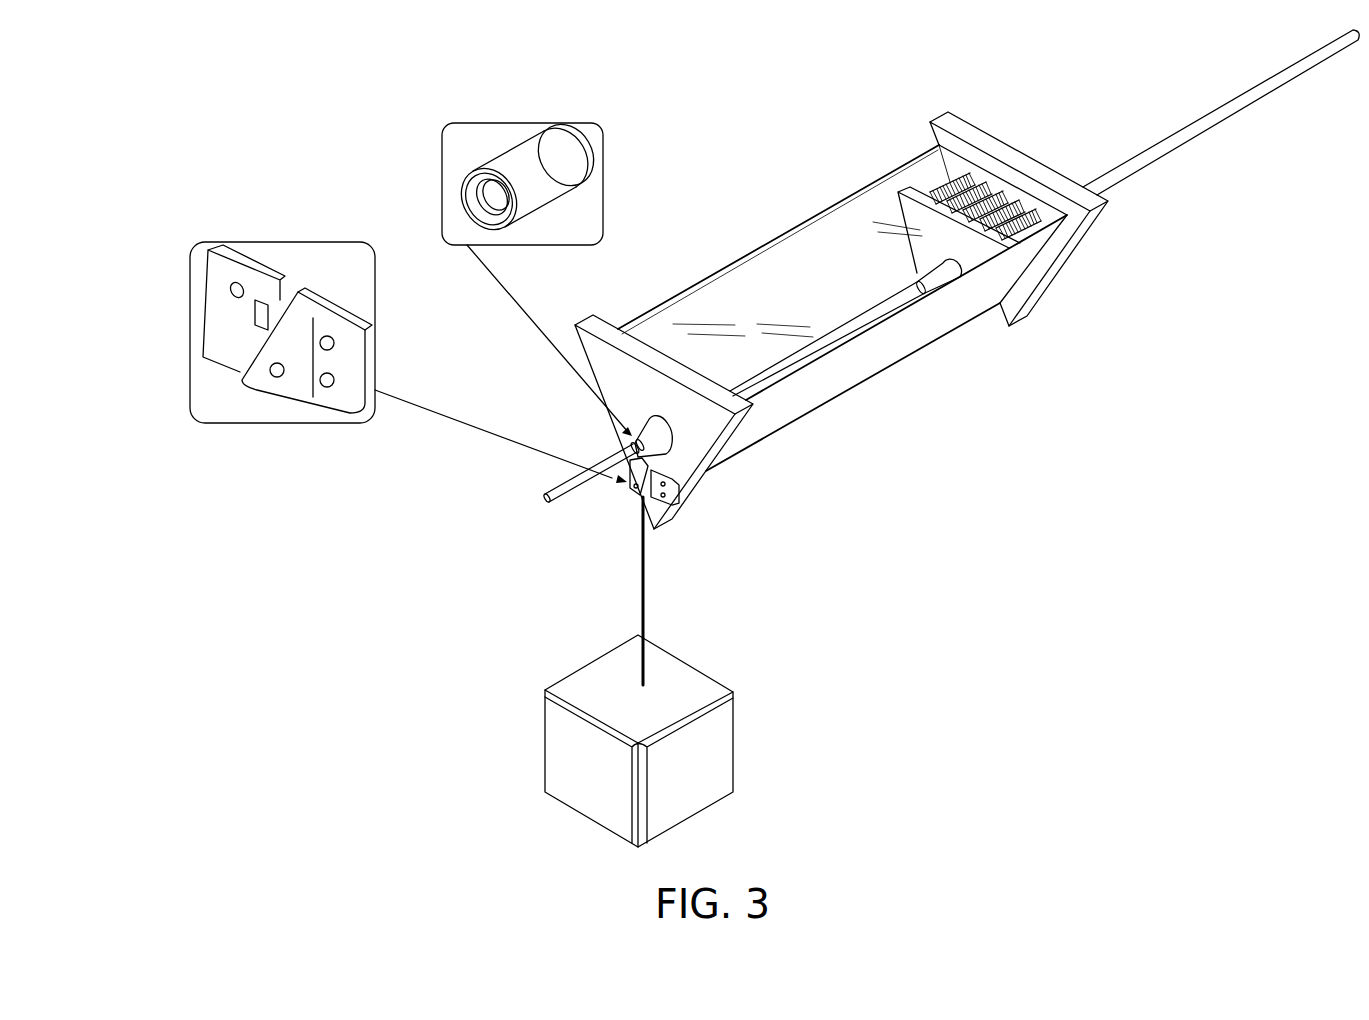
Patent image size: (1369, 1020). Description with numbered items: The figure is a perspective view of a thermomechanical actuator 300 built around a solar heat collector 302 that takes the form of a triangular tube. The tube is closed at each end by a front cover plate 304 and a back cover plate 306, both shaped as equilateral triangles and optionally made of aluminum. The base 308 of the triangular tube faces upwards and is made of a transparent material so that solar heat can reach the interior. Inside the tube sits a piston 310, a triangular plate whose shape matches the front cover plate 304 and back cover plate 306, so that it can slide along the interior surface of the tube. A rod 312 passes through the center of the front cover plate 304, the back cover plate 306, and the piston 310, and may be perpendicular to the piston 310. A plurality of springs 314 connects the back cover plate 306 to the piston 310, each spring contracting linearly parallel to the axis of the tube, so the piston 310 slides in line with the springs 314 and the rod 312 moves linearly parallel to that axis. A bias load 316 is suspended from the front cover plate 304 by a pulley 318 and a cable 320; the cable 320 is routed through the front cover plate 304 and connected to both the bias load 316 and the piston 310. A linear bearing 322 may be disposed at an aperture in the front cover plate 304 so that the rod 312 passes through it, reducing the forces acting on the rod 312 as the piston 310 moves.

The thermomechanical actuator 300 is at (150, 118).
The solar heat collector 302 is at (802, 223).
The front cover plate 304 is at (705, 437).
The back cover plate 306 is at (958, 120).
The base 308 is at (722, 310).
The piston 310 is at (900, 190).
The rod 312 is at (863, 320).
The plurality of springs 314 is at (990, 192).
The bias load 316 is at (715, 752).
The pulley 318 is at (250, 410).
The cable 320 is at (647, 590).
The linear bearing 322 is at (470, 147).